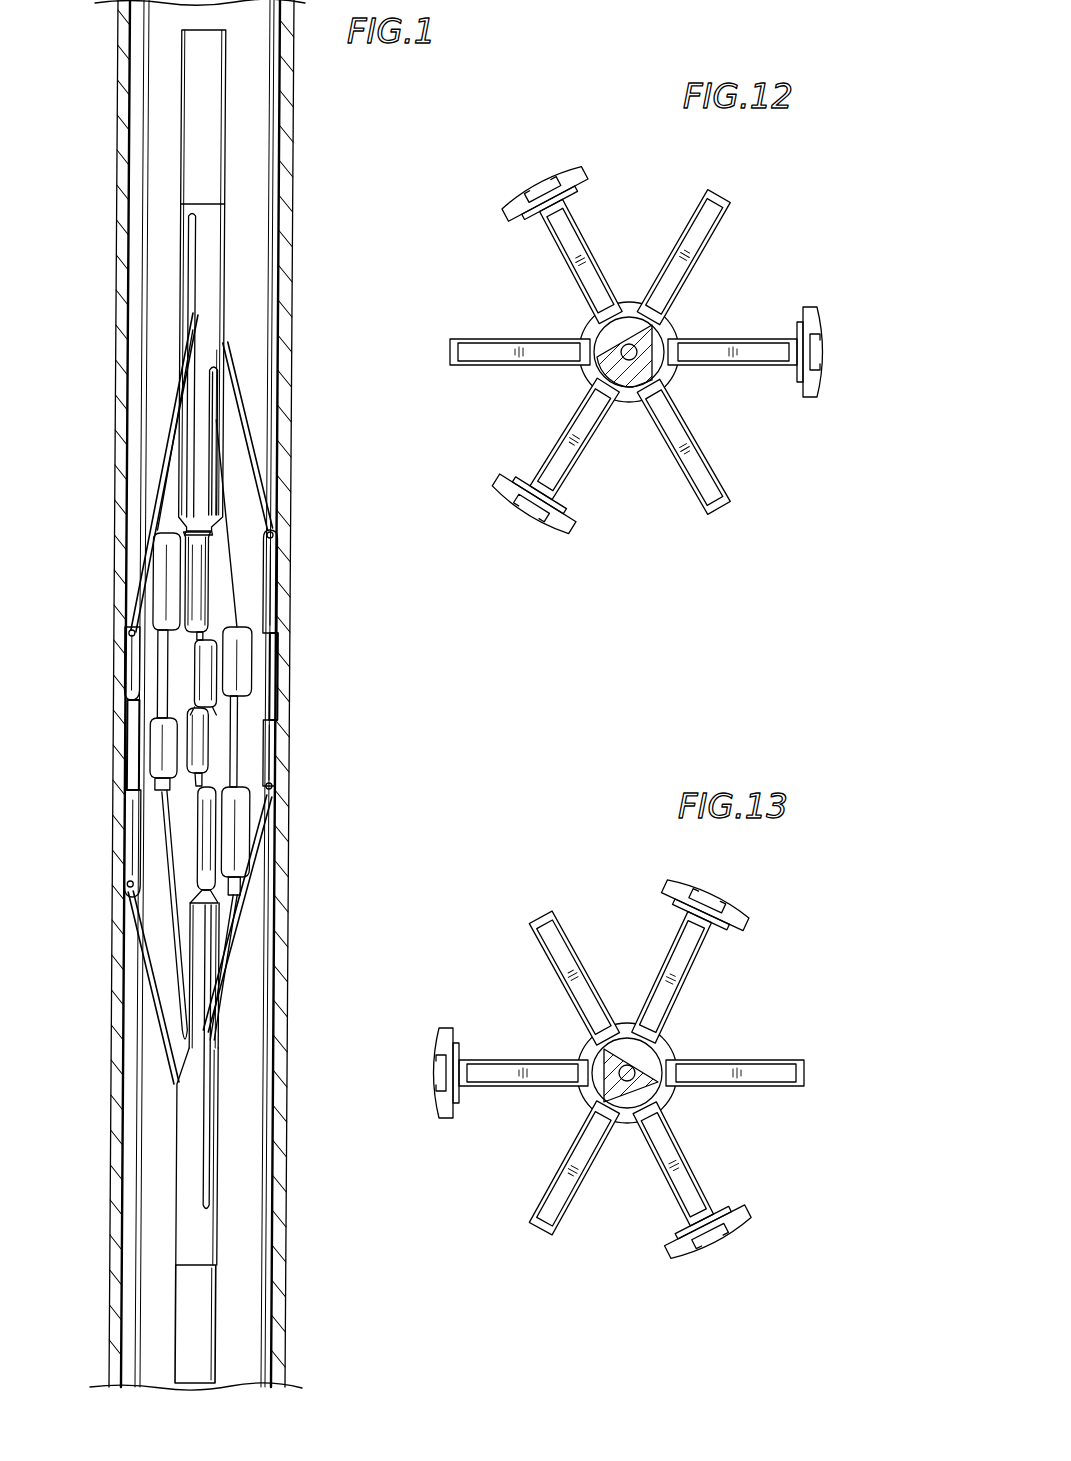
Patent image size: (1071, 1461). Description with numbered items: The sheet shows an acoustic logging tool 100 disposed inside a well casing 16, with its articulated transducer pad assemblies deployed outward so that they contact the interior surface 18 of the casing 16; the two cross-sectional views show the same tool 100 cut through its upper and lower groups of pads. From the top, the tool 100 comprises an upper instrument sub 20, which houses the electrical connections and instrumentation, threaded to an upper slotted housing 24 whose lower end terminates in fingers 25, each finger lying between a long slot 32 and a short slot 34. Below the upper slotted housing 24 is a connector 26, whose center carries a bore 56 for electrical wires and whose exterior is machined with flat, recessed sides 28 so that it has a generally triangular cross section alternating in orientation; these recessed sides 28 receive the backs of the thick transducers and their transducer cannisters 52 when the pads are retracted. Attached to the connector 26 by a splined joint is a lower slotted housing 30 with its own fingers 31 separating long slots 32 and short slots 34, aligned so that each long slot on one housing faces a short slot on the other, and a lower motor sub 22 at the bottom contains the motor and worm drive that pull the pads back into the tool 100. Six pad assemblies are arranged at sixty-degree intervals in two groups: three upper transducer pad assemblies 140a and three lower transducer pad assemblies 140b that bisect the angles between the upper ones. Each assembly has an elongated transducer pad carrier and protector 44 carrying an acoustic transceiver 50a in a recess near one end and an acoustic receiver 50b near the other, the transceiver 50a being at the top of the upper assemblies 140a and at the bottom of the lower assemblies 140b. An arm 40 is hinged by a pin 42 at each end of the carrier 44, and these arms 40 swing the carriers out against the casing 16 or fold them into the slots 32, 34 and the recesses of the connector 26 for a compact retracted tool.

In FIG. 1, the casing 16 is at (287, 164).
In FIG. 1, the interior surface of casing 18 is at (275, 229).
In FIG. 1, the upper instrument sub 20 is at (196, 107).
In FIG. 1, the lower motor sub 22 is at (190, 1313).
In FIG. 1, the upper slotted housing 24 is at (222, 320).
In FIG. 12, the upper slotted housing 24 is at (631, 302).
In FIG. 1, the fingers 25 is at (206, 495).
In FIG. 1, the connector 26 is at (201, 567).
In FIG. 12, the connector 26 is at (620, 387).
In FIG. 13, the connector 26 is at (608, 1083).
In FIG. 1, the flat, recessed sides 28 is at (196, 861).
In FIG. 12, the flat, recessed sides 28 is at (662, 370).
In FIG. 13, the flat, recessed sides 28 is at (650, 1102).
In FIG. 1, the lower slotted housing 30 is at (190, 1144).
In FIG. 13, the lower slotted housing 30 is at (630, 1127).
In FIG. 1, the fingers 31 is at (208, 956).
In FIG. 1, the long slot 32 is at (192, 255).
In FIG. 1, the short slot 34 is at (220, 382).
In FIG. 1, the arms 40 is at (251, 430).
In FIG. 12, the arms 40 is at (518, 340).
In FIG. 13, the arms 40 is at (511, 1068).
In FIG. 1, the pin 42 is at (276, 539).
In FIG. 1, the transducer pad carrier and protector 44 is at (276, 672).
In FIG. 12, the transducer pad carrier and protector 44 is at (580, 533).
In FIG. 13, the transducer pad carrier and protector 44 is at (676, 1250).
In FIG. 1, the acoustic transceiver 50a is at (274, 596).
In FIG. 1, the acoustic receiver 50b is at (275, 761).
In FIG. 12, the transducer cannisters 52 is at (525, 488).
In FIG. 13, the transducer cannisters 52 is at (735, 1208).
In FIG. 12, the bore 56 is at (648, 345).
In FIG. 13, the bore 56 is at (645, 1050).
In FIG. 1, the acoustic logging tool 100 is at (229, 735).
In FIG. 1, the upper transducer pad assemblies 140a is at (279, 643).
In FIG. 12, the upper transducer pad assemblies 140a is at (571, 166).
In FIG. 1, the lower transducer pad assemblies 140b is at (130, 745).
In FIG. 13, the lower transducer pad assemblies 140b is at (760, 932).